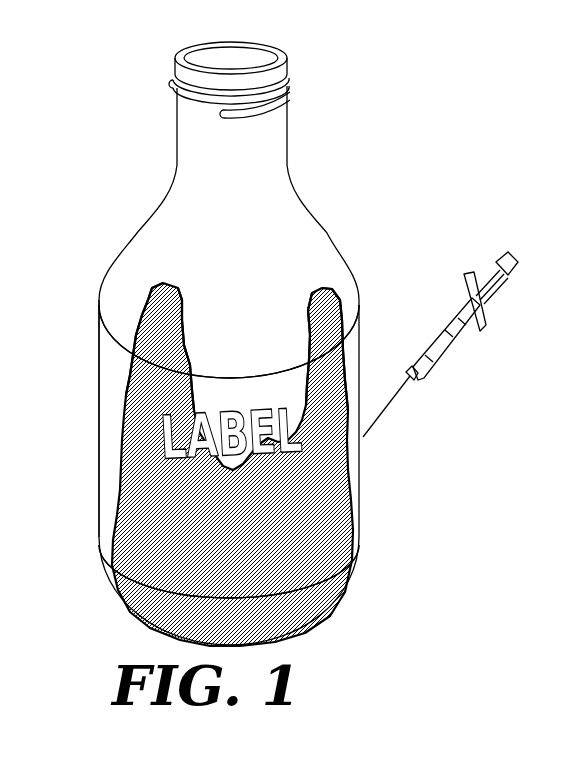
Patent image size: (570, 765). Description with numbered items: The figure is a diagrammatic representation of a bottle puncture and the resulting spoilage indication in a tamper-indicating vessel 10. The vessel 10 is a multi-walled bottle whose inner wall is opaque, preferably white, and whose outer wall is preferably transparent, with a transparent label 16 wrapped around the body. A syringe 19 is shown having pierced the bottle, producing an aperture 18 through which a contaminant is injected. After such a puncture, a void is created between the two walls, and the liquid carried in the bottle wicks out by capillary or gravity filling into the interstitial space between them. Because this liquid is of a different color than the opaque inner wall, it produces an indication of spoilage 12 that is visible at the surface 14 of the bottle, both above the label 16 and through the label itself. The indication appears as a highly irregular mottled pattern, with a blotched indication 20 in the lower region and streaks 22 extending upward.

The vessel 10 is at (330, 208).
The indication of spoilage 12 is at (340, 357).
The surface 14 is at (246, 346).
The transparent label 16 is at (116, 458).
The aperture 18 is at (292, 504).
The syringe 19 is at (428, 368).
The blotched indication 20 is at (305, 553).
The streaks 22 is at (185, 297).